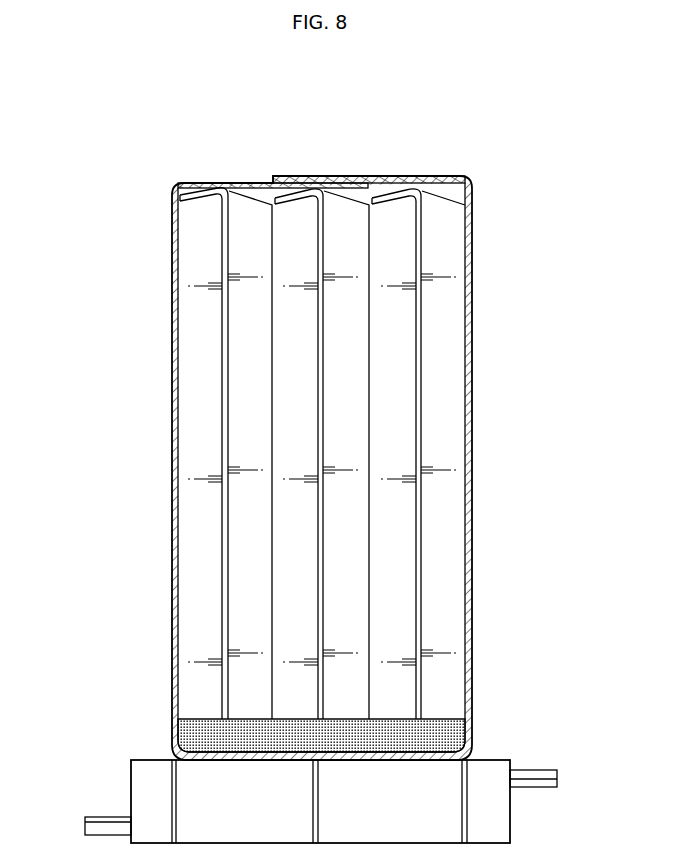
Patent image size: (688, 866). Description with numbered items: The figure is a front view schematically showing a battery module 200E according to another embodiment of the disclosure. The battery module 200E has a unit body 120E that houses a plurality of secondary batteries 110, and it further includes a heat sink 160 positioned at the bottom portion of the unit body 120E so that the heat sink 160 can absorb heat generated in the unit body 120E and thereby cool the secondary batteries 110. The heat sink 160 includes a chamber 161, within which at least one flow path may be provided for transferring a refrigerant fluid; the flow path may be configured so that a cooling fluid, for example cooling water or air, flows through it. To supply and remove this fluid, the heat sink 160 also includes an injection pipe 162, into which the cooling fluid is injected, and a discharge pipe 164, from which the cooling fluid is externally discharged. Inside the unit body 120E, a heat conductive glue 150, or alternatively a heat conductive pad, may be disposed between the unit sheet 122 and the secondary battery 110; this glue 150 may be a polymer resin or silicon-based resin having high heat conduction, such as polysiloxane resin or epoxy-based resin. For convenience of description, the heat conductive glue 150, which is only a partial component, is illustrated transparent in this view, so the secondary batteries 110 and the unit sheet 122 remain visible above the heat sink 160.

The battery module 200E is at (212, 91).
The unit body 120E is at (146, 207).
The unit sheet 122 is at (190, 183).
The secondary battery 110 is at (260, 390).
The heat conductive glue 150 is at (445, 735).
The heat sink 160 is at (120, 755).
The chamber 161 is at (510, 818).
The injection pipe 162 is at (557, 779).
The discharge pipe 164 is at (85, 826).